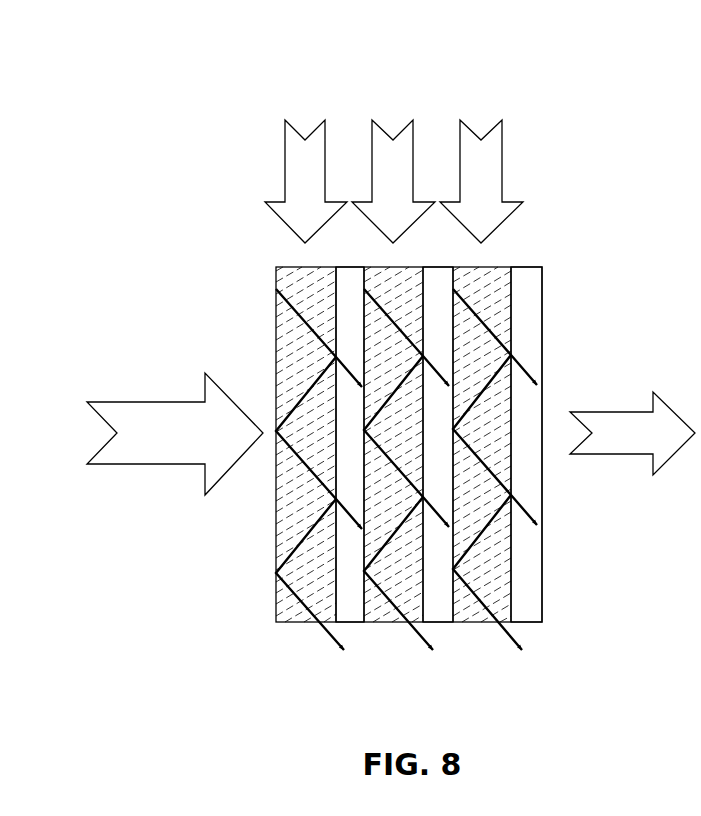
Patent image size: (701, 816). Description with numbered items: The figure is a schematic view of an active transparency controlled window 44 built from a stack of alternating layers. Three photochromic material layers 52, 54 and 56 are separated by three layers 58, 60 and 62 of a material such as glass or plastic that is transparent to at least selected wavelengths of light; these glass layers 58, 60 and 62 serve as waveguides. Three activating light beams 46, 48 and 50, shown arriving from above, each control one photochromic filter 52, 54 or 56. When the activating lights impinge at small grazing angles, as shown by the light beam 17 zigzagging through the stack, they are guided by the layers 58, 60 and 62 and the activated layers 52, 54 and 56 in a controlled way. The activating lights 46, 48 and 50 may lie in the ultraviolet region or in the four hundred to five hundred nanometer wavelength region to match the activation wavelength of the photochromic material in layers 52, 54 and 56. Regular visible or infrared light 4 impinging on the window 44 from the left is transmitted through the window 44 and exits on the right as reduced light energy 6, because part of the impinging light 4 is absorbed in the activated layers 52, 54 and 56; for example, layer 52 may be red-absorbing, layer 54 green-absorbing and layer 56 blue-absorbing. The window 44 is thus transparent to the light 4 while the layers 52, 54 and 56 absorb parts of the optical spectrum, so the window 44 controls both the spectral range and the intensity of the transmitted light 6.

The impinging light 4 is at (133, 402).
The reduced light energy 6 is at (598, 412).
The light beam 17 is at (325, 622).
The active transparency controlled window 44 is at (609, 188).
The activating light beam 46 is at (325, 148).
The activating light beam 48 is at (413, 148).
The activating light beam 50 is at (502, 148).
The photochromic material layer 52 is at (354, 622).
The photochromic material layer 54 is at (440, 622).
The photochromic material layer 56 is at (528, 622).
The glass layer 58 is at (300, 622).
The glass layer 60 is at (383, 622).
The glass layer 62 is at (470, 622).